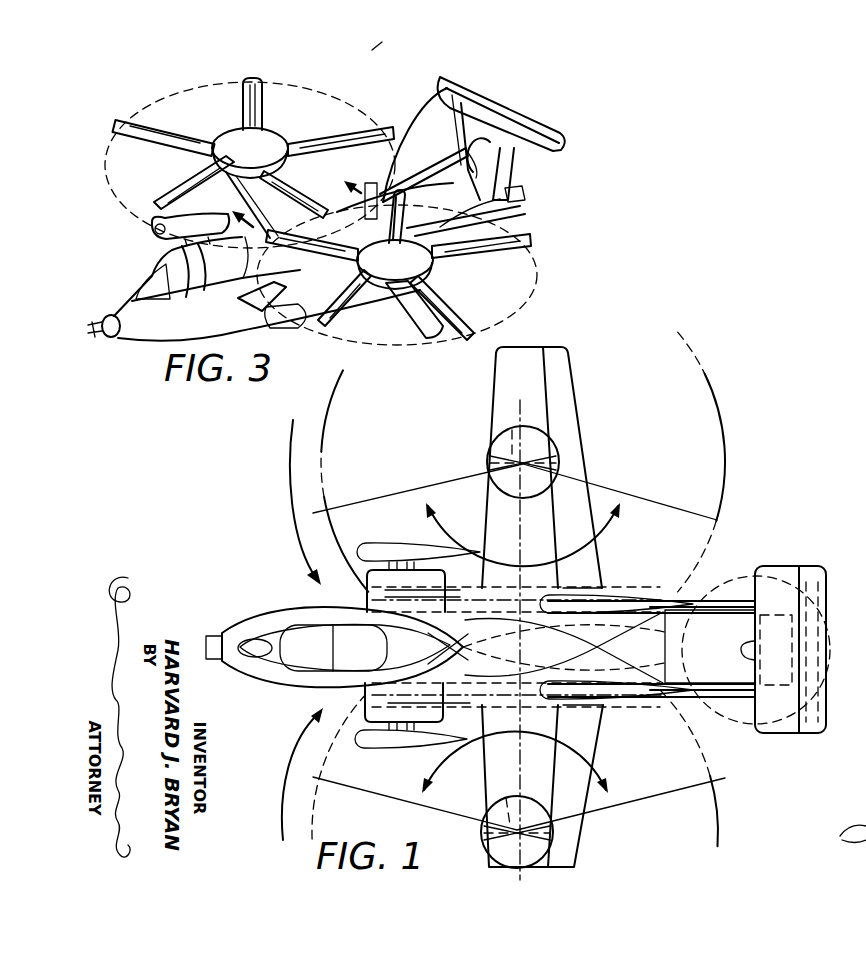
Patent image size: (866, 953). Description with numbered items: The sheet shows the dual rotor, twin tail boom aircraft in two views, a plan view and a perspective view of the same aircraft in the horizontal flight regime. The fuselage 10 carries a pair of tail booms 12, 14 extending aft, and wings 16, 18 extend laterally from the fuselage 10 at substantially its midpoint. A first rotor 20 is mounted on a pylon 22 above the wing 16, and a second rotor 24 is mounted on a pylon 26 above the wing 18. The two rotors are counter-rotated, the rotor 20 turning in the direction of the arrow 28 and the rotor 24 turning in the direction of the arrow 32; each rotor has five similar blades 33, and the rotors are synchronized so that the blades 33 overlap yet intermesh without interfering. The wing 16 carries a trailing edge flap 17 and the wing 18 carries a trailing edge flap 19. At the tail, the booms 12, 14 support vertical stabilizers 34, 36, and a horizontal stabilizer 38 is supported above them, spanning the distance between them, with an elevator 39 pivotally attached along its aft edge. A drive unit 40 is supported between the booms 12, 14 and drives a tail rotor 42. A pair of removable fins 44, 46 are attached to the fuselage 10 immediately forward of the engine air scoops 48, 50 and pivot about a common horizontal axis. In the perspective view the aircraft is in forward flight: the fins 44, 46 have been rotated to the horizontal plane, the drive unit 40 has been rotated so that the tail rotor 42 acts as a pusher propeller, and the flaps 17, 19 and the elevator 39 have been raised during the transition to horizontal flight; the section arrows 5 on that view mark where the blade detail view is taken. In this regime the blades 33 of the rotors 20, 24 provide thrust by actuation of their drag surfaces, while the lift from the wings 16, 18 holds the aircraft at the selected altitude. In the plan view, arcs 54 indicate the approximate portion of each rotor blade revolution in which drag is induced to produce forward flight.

In FIG. 3, the section line arrows 5 is at (288, 191).
In FIG. 1, the fuselage 10 is at (258, 680).
In FIG. 3, the tail boom 12 is at (369, 188).
In FIG. 1, the tail boom 12 is at (718, 607).
In FIG. 3, the tail boom 14 is at (470, 212).
In FIG. 1, the tail boom 14 is at (698, 698).
In FIG. 3, the wing 16 is at (213, 157).
In FIG. 1, the wing 16 is at (500, 392).
In FIG. 3, the trailing edge flap 17 is at (290, 155).
In FIG. 1, the trailing edge flap 17 is at (570, 396).
In FIG. 3, the wing 18 is at (422, 337).
In FIG. 1, the wing 18 is at (485, 862).
In FIG. 3, the trailing edge flap 19 is at (466, 338).
In FIG. 1, the trailing edge flap 19 is at (572, 857).
In FIG. 3, the first rotor 20 is at (350, 103).
In FIG. 1, the first rotor 20 is at (730, 445).
In FIG. 1, the pylon 22 is at (523, 449).
In FIG. 3, the second rotor 24 is at (538, 292).
In FIG. 1, the second rotor 24 is at (730, 805).
In FIG. 1, the pylon 26 is at (517, 817).
In FIG. 1, the arrow 28 is at (290, 510).
In FIG. 1, the arrow 32 is at (300, 765).
In FIG. 3, the blades 33 is at (160, 150).
In FIG. 3, the vertical stabilizer 34 is at (457, 120).
In FIG. 3, the vertical stabilizer 36 is at (514, 157).
In FIG. 3, the horizontal stabilizer 38 is at (455, 86).
In FIG. 1, the horizontal stabilizer 38 is at (788, 733).
In FIG. 3, the elevator 39 is at (505, 100).
In FIG. 1, the elevator 39 is at (820, 733).
In FIG. 3, the drive unit 40 is at (468, 170).
In FIG. 1, the drive unit 40 is at (752, 668).
In FIG. 3, the tail rotor 42 is at (526, 190).
In FIG. 3, the removable fin 44 is at (183, 248).
In FIG. 1, the removable fin 44 is at (366, 603).
In FIG. 3, the removable fin 46 is at (248, 304).
In FIG. 1, the removable fin 46 is at (366, 691).
In FIG. 1, the engine air scoop 48 is at (455, 596).
In FIG. 1, the engine air scoop 50 is at (453, 705).
In FIG. 1, the arcs 54 is at (603, 516).